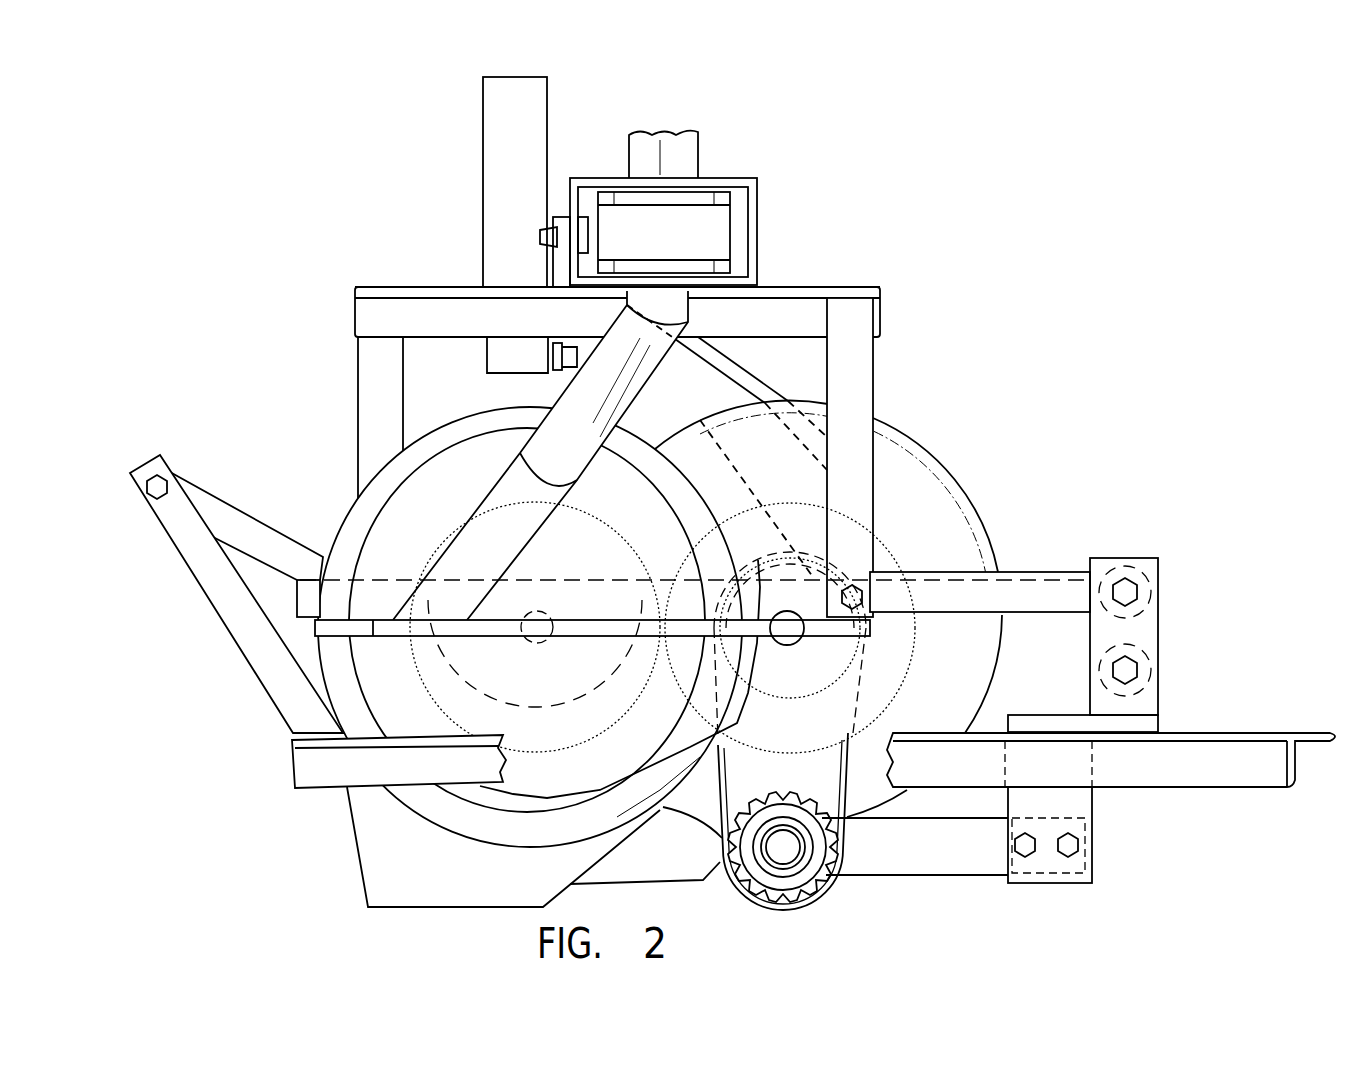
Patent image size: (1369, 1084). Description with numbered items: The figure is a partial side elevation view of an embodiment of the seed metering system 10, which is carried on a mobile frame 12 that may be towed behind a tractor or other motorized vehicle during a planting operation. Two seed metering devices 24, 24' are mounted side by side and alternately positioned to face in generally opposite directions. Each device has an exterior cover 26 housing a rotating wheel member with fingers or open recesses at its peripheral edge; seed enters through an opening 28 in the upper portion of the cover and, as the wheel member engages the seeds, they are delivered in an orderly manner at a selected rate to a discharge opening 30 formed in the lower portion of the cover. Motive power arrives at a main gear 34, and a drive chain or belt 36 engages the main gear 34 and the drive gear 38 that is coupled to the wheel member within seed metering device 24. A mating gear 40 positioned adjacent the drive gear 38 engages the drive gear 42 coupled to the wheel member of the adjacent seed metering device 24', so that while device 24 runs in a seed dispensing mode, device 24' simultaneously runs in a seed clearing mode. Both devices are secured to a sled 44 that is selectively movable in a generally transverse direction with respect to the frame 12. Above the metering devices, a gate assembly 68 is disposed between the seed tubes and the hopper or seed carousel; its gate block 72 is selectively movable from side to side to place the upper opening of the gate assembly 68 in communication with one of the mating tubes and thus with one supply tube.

The seed metering system 10 is at (1068, 401).
The mobile frame 12 is at (1195, 762).
The seed metering device 24 is at (841, 587).
The seed metering device 24' is at (512, 617).
The exterior cover 26 is at (632, 504).
The opening 28 is at (410, 643).
The discharge opening 30 is at (383, 932).
The main gear 34 is at (803, 805).
The drive chain or belt 36 is at (860, 740).
The drive gear 38 is at (880, 665).
The mating gear 40 is at (915, 612).
The drive gear 42 is at (310, 705).
The sled 44 is at (236, 594).
The gate assembly 68 is at (832, 237).
The gate block 72 is at (690, 220).